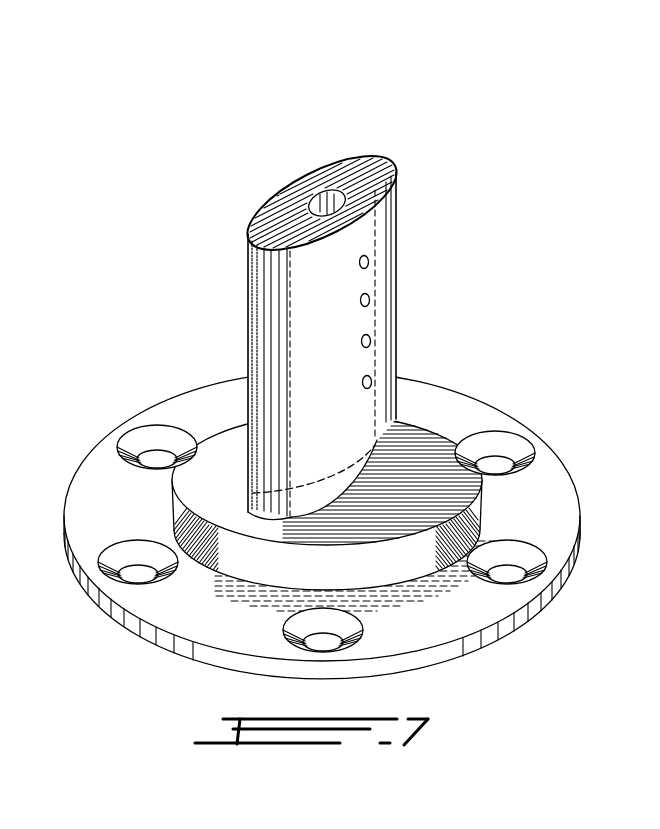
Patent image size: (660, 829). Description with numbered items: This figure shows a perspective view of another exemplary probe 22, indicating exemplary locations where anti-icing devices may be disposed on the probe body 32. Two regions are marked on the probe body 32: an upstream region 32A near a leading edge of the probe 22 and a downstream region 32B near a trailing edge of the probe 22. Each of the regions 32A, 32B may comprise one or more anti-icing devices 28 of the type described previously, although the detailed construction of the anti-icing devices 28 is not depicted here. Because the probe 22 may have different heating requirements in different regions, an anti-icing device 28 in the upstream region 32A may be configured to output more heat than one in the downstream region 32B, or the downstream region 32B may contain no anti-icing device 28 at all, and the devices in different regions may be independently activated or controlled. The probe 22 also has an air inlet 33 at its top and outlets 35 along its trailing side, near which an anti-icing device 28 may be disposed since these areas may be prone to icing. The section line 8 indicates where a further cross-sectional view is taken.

The probe 22 is at (343, 285).
The anti-icing device 28 is at (410, 397).
The probe body 32 is at (343, 321).
The upstream region 32A is at (270, 292).
The downstream region 32B is at (333, 453).
The air inlet 33 is at (305, 186).
The outlets 35 is at (372, 303).
The section line 8- 8 is at (481, 210).